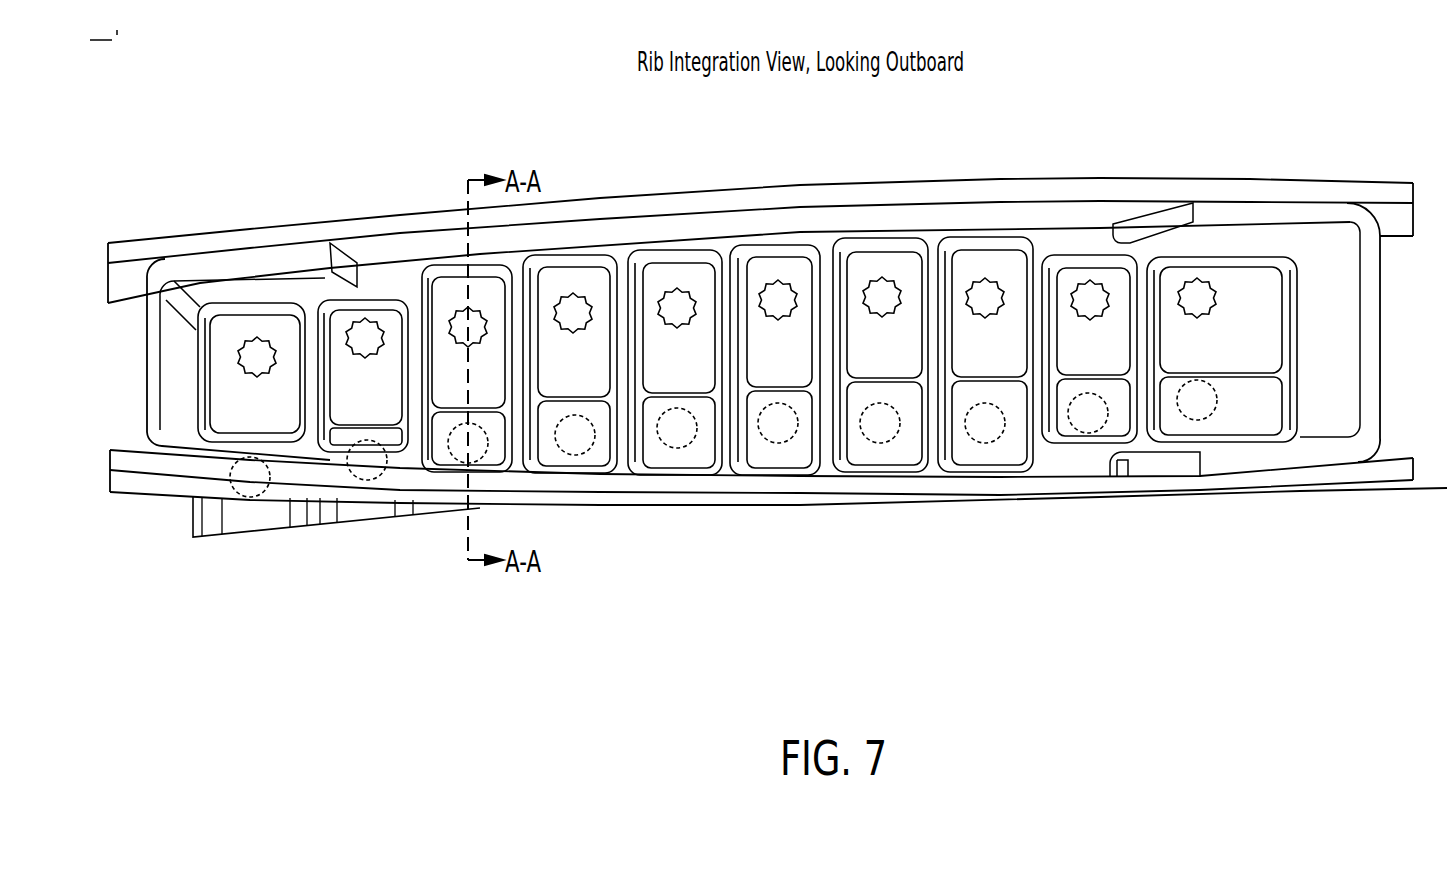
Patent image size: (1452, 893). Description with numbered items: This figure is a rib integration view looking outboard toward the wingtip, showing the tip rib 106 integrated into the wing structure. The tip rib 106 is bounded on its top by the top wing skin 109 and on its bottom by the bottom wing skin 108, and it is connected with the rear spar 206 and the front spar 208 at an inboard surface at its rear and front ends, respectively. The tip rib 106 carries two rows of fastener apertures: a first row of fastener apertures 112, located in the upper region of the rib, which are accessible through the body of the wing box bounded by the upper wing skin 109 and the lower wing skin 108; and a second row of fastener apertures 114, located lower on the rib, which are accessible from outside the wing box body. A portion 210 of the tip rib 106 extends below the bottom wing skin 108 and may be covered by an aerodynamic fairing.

The tip rib 106 is at (362, 404).
The bottom wing skin 108 is at (1451, 487).
The top wing skin 109 is at (1451, 215).
The first row of fastener apertures 112 is at (356, 328).
The second row of fastener apertures 114 is at (779, 448).
The rear spar 206 is at (120, 427).
The front spar 208 is at (1442, 407).
The portion of tip rib 210 is at (240, 521).